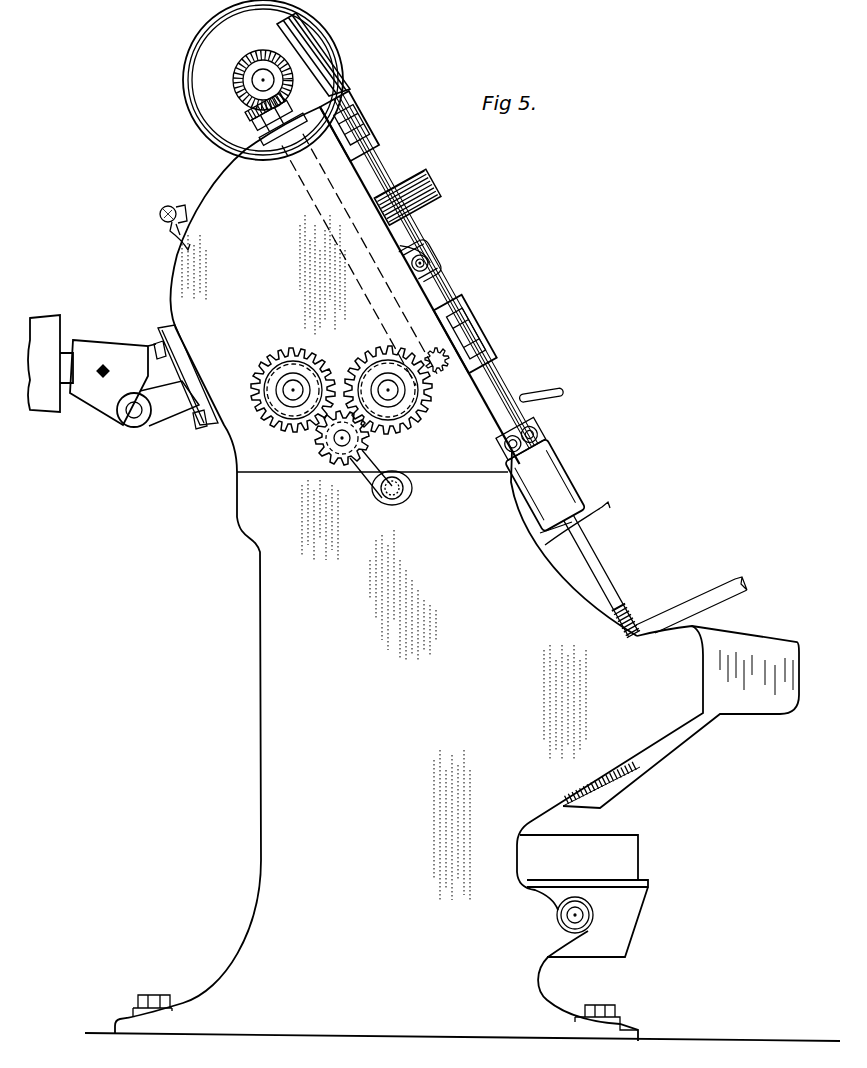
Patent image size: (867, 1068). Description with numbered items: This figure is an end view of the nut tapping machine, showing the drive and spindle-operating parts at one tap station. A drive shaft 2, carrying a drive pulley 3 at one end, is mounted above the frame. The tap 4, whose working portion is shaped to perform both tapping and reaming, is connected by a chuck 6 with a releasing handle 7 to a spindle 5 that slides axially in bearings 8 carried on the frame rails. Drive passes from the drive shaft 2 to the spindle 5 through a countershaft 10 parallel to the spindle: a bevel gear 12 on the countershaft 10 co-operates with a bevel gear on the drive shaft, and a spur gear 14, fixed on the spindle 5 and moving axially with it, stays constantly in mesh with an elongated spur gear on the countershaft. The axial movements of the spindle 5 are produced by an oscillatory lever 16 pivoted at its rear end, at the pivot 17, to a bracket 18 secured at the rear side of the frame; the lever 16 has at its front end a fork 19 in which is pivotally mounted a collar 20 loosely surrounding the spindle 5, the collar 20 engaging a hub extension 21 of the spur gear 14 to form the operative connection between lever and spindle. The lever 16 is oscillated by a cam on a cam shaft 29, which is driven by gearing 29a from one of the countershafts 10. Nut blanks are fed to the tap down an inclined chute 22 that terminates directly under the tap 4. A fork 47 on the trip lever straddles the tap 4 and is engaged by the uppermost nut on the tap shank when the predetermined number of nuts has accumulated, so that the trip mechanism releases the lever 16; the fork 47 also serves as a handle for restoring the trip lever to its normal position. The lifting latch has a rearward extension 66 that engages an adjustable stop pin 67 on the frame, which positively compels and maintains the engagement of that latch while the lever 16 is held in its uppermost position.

The drive shaft 2 is at (262, 80).
The drive pulley 3 is at (190, 62).
The tap 4 is at (596, 586).
The spindle 5 is at (385, 168).
The chuck 6 is at (560, 470).
The releasing handle 7 is at (261, 602).
The bearings 8 is at (358, 126).
The countershaft 10 is at (305, 175).
The bevel gear 12 is at (258, 120).
The spur gear 14 is at (428, 192).
The oscillatory lever 16 is at (145, 343).
The pivot 17 is at (132, 418).
The bracket 18 is at (182, 412).
The fork 19 is at (440, 264).
The collar 20 is at (437, 250).
The hub extension 21 is at (426, 232).
The inclined chute 22 is at (700, 615).
The cam shaft 29 is at (293, 392).
The gearing 29a is at (355, 372).
The fork 47 is at (594, 512).
The rearward extension 66 is at (172, 238).
The stop pin 67 is at (160, 214).